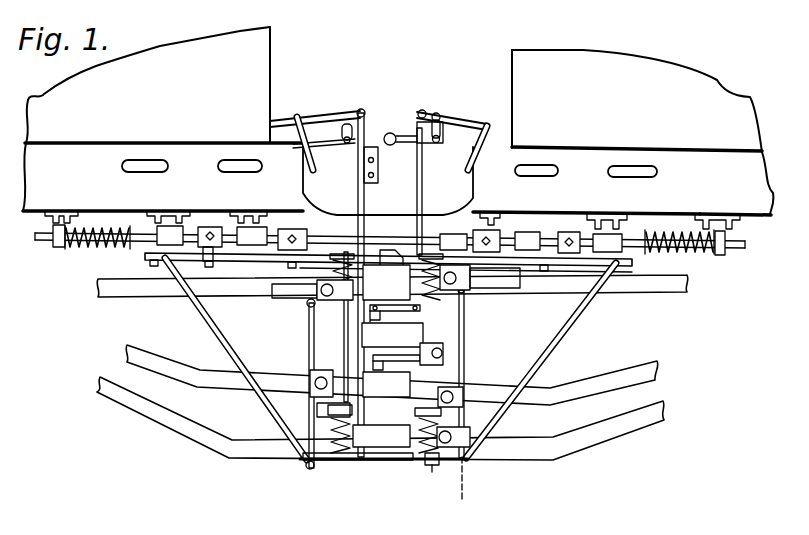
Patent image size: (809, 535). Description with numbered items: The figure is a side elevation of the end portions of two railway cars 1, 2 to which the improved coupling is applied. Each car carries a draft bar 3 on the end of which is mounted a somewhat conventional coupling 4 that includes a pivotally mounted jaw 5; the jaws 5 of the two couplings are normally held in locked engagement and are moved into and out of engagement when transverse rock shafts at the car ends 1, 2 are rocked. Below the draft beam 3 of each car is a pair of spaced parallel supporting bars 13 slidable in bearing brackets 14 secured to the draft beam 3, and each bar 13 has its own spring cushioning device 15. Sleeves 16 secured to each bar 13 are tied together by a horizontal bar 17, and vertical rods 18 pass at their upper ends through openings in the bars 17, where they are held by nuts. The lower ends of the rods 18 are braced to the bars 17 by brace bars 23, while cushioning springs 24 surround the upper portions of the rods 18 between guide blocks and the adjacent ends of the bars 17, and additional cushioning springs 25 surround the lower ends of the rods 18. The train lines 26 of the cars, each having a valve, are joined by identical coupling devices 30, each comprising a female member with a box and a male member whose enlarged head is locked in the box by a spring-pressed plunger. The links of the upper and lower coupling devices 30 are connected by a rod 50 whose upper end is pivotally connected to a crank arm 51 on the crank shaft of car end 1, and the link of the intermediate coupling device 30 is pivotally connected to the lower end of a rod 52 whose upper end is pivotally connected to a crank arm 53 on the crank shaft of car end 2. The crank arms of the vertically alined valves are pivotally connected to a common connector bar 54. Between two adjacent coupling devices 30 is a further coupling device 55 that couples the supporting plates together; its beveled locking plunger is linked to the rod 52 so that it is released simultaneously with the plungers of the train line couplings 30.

The car end portion 1 is at (247, 77).
The car end portion 2 is at (640, 72).
The draft bar 3 is at (753, 207).
The coupling 4 is at (447, 155).
The jaw 5 is at (300, 266).
The supporting bar 13 is at (636, 249).
The bearing bracket 14 is at (610, 222).
The spring cushioning device 15 is at (692, 252).
The sleeve 16 is at (487, 227).
The horizontal bar 17 is at (548, 272).
The rod 18 is at (342, 318).
The brace bar 23 is at (557, 333).
The cushioning spring 24 is at (303, 292).
The cushioning spring 25 is at (423, 460).
The train line 26 is at (102, 377).
The coupling device 30 is at (380, 447).
The rod 50 is at (352, 223).
The crank arm 51 is at (323, 122).
The rod 52 is at (417, 228).
The crank arm 53 is at (422, 112).
The connector bar 54 is at (310, 418).
The coupling device 55 is at (410, 333).